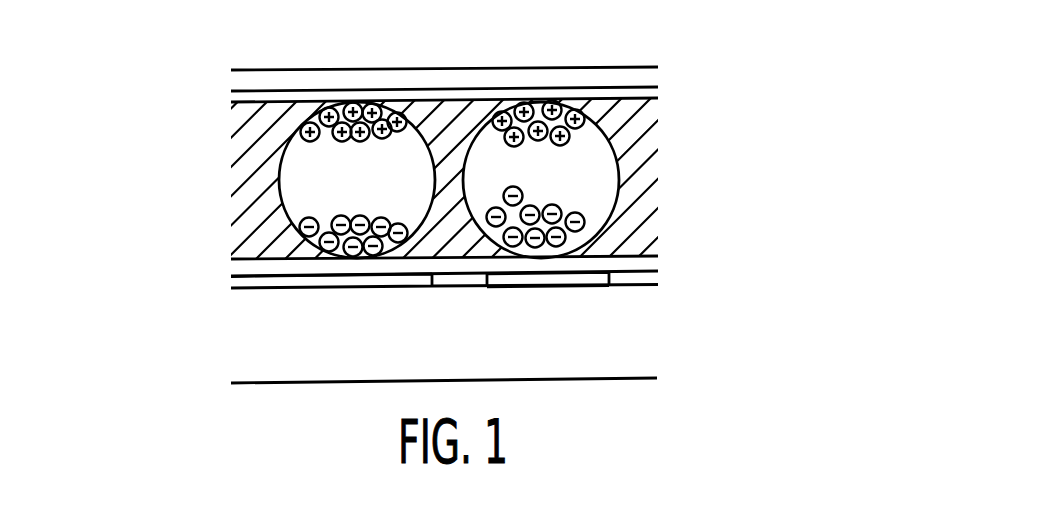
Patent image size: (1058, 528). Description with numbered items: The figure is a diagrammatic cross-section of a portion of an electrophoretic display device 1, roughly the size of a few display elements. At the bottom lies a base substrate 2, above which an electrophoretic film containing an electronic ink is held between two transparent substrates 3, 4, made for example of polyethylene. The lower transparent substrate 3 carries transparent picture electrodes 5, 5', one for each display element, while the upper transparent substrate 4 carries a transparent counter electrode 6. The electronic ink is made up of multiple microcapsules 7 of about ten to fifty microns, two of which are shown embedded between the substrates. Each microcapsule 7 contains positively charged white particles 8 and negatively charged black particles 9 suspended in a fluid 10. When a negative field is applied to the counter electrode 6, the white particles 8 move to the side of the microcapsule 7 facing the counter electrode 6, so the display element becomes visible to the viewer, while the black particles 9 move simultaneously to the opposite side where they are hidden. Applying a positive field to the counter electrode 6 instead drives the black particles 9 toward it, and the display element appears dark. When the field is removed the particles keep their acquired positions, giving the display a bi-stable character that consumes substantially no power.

The electrophoretic display device 1 is at (122, 353).
The base substrate 2 is at (596, 345).
The transparent substrate 3 is at (600, 262).
The transparent substrate 4 is at (628, 94).
The picture electrode 5 is at (548, 302).
The picture electrode 5' is at (331, 304).
The counter electrode 6 is at (583, 82).
The microcapsule 7 is at (277, 177).
The positively charged white particles 8 is at (362, 102).
The negatively charged black particles 9 is at (303, 221).
The fluid 10 is at (645, 156).